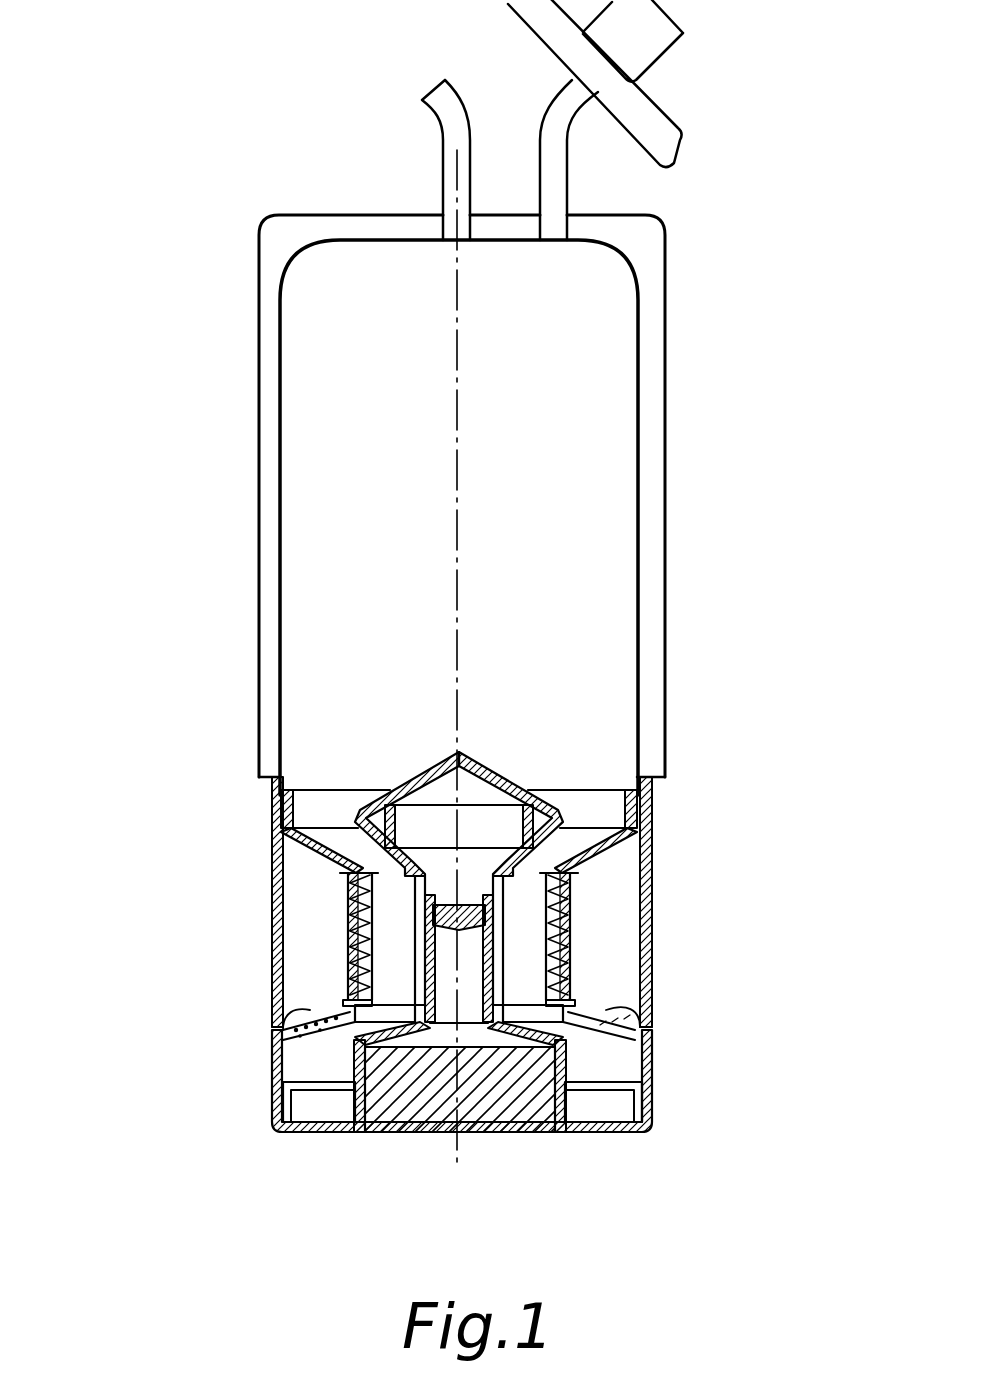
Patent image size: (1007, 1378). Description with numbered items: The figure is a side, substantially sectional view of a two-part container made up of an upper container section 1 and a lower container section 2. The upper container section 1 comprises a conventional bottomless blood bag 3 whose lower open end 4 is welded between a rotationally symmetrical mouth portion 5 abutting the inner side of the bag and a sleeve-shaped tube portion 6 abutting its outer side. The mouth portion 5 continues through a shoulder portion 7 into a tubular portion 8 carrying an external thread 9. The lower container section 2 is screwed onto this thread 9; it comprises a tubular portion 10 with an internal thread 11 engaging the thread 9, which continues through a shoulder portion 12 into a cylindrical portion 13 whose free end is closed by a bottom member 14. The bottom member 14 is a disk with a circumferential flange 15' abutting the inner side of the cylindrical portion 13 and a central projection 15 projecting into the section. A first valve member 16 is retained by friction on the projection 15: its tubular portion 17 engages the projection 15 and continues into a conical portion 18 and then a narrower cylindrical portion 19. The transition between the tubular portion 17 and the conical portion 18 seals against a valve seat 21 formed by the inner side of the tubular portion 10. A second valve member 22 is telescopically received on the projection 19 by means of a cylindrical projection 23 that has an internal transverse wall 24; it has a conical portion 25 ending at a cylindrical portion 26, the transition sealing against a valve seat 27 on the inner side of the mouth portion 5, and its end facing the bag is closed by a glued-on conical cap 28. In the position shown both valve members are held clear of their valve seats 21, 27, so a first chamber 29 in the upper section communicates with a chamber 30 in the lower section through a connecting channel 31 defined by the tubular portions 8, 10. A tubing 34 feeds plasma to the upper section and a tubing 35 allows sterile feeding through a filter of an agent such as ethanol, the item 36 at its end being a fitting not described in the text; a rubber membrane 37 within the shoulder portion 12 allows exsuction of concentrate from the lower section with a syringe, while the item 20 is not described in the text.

The upper container section 1 is at (674, 749).
The lower container section 2 is at (658, 1075).
The blood bag 3 is at (613, 612).
The lower open end 4 is at (655, 800).
The mouth portion 5 is at (600, 852).
The tube portion 6 is at (577, 923).
The shoulder portion 7 is at (575, 866).
The tubular portion 8 is at (570, 952).
The thread 9 is at (570, 1000).
The tubular portion 10 is at (350, 972).
The internal thread 11 is at (350, 935).
The shoulder portion 12 is at (600, 1005).
The cylindrical portion 13 is at (340, 1040).
The bottom member 14 is at (595, 1063).
The projection 15 is at (458, 1137).
The circumferential flange 15' is at (523, 1079).
The first valve member 16 is at (353, 1100).
The tubular portion 17 is at (585, 1060).
The conical portion 18 is at (535, 1020).
The cylindrical portion 19 is at (460, 1015).
The piston stem 20 is at (520, 990).
The valve seat 21 is at (320, 1015).
The second valve member 22 is at (430, 905).
The cylindrical projection 23 is at (350, 913).
The transverse wall 24 is at (553, 885).
The conical portion 25 is at (345, 873).
The cylindrical portion 26 is at (280, 812).
The valve seat 27 is at (330, 877).
The conical cap 28 is at (497, 783).
The first chamber 29 is at (577, 552).
The chamber 30 is at (655, 1140).
The connecting channel 31 is at (350, 955).
The tubing 34 is at (447, 117).
The tubing 35 is at (552, 177).
The gas connector 36 is at (620, 108).
The rubber membrane 37 is at (300, 1020).